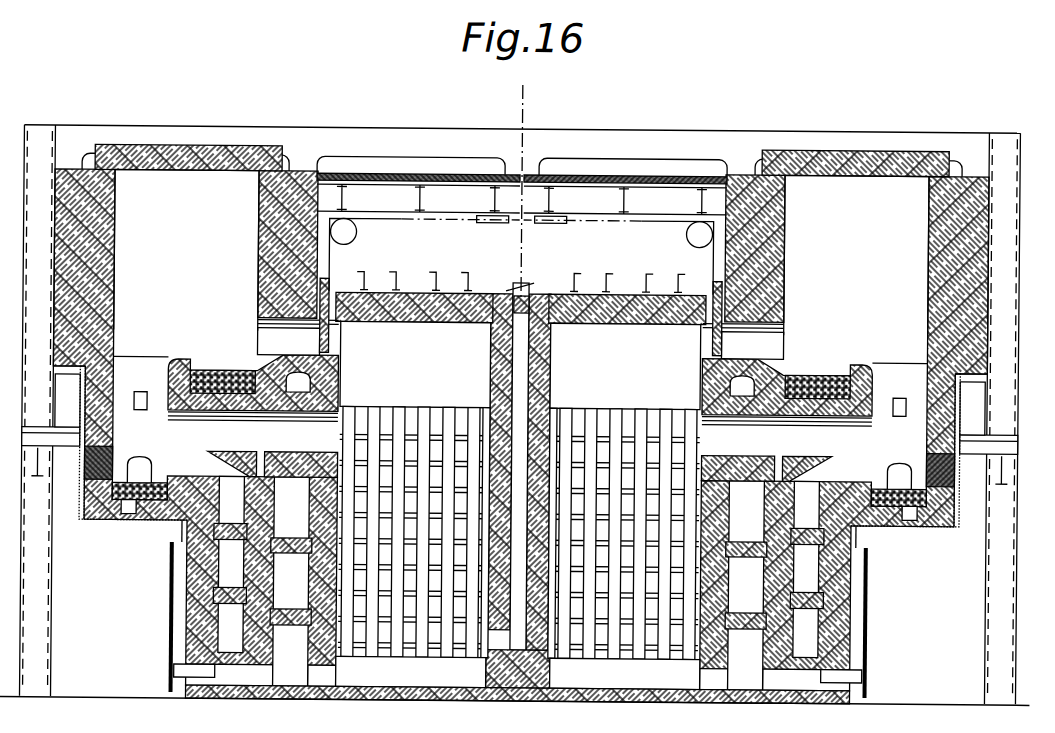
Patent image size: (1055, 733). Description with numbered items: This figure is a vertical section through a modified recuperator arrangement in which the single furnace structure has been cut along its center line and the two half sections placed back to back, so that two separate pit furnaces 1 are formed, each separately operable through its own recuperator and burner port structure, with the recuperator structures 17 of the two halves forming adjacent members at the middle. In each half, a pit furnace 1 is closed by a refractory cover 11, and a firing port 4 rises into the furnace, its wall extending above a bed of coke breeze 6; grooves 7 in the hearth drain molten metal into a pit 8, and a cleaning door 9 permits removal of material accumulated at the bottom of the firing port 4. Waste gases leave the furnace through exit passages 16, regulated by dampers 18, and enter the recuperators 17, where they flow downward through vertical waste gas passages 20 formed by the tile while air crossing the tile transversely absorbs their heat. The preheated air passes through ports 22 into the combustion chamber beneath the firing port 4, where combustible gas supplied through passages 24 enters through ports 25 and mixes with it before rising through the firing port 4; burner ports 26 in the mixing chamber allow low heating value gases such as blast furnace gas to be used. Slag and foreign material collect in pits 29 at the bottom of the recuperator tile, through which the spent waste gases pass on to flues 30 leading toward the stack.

The pit furnace 1 is at (521, 252).
The firing port 4 is at (156, 372).
The bed of coke breeze 6 is at (812, 374).
The grooves 7 is at (140, 394).
The pit 8 is at (180, 530).
The cleaning door 9 is at (122, 486).
The cover 11 is at (190, 147).
The exit passages 16 is at (520, 340).
The recuperator structures 17 is at (520, 350).
The dampers 18 is at (330, 340).
The vertical waste gas passages 20 is at (352, 416).
The ports 22 is at (519, 453).
The passages 24 is at (519, 566).
The ports 25 is at (832, 470).
The burner ports 26 is at (83, 470).
The pits 29 is at (518, 672).
The flues 30 is at (519, 583).